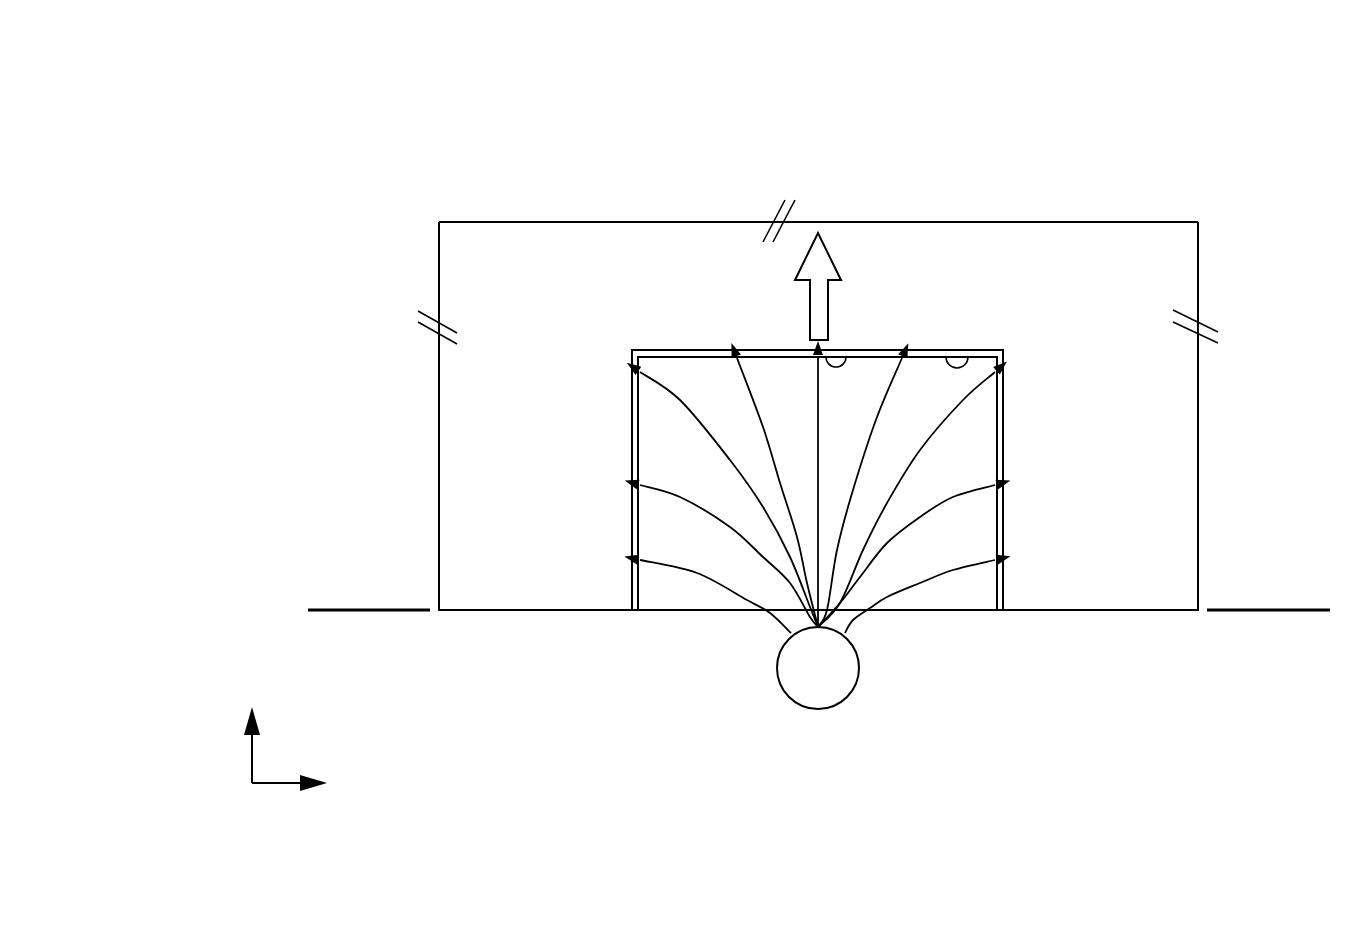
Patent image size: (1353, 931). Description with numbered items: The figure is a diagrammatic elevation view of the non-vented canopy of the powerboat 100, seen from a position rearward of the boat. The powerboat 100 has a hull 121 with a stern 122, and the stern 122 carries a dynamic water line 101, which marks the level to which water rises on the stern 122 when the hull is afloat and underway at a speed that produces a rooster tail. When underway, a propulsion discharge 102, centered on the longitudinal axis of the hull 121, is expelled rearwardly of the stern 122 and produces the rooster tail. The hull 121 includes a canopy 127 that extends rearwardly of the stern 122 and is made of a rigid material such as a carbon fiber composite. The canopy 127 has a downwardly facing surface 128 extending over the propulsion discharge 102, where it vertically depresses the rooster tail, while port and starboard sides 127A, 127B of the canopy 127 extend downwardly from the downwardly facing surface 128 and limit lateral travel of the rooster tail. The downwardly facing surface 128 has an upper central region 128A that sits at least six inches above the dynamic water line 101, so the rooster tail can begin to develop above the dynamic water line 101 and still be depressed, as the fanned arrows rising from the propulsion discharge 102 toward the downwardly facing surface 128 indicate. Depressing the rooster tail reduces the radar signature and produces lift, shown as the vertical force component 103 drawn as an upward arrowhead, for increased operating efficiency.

The powerboat 100 is at (422, 173).
The dynamic water line 101 is at (1255, 612).
The propulsion discharge 102 is at (850, 697).
The vertical force component 103 is at (809, 305).
The hull 121 is at (438, 422).
The stern 122 is at (1178, 229).
The canopy 127 is at (1003, 350).
The port side of the canopy 127A is at (632, 595).
The starboard side of the canopy 127B is at (1003, 592).
The downwardly facing surface 128 is at (970, 357).
The upper central region 128A is at (847, 364).